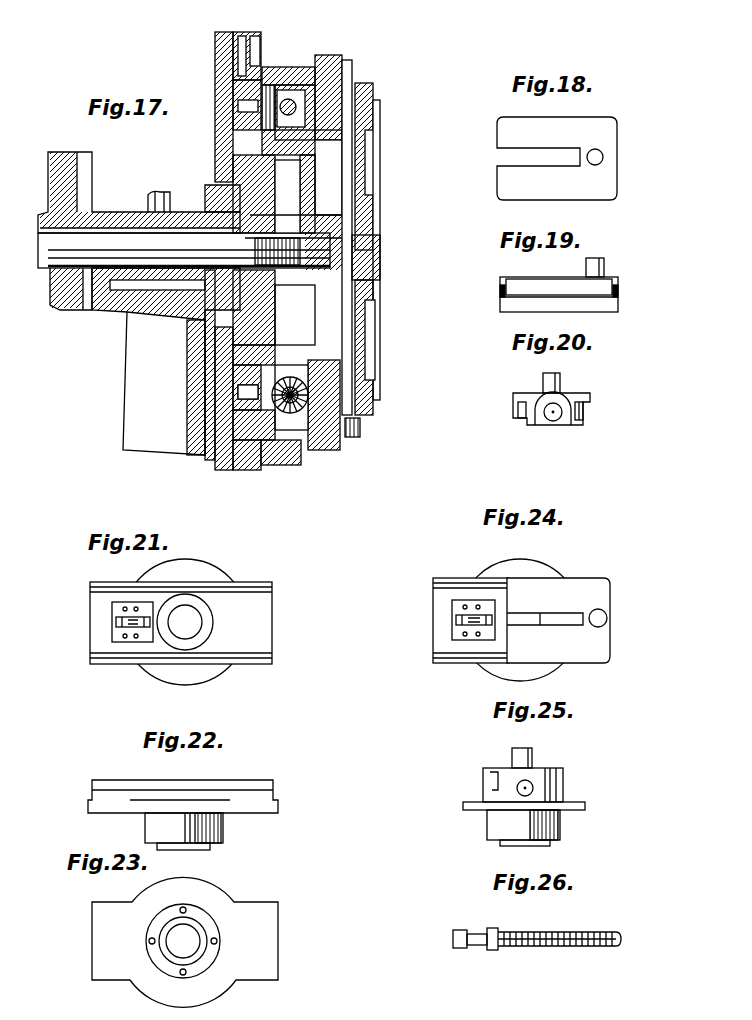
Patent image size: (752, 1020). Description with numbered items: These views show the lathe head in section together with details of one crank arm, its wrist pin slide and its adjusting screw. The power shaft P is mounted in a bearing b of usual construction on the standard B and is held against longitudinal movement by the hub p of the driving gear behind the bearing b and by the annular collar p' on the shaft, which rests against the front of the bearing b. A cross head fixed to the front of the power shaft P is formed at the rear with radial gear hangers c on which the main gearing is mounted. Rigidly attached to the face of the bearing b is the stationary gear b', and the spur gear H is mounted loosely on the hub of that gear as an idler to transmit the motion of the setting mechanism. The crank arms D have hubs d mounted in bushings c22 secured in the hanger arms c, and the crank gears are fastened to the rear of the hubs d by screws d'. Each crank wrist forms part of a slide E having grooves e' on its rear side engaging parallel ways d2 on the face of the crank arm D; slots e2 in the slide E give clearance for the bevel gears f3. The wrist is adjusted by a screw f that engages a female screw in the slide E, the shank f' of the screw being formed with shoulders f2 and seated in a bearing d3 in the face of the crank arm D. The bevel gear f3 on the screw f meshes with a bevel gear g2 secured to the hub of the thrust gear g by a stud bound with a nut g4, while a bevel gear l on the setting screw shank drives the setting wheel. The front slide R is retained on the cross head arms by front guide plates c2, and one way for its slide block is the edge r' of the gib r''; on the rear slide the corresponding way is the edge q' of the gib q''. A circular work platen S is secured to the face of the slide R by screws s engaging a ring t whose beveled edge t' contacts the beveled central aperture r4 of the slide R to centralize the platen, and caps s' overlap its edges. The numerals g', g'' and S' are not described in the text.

In FIG. 17, the hub of the driving gear p is at (130, 231).
In FIG. 17, the power shaft P is at (184, 250).
In FIG. 17, the standard B is at (166, 361).
In FIG. 17, the bearing b is at (135, 256).
In FIG. 17, the stationary gear b' is at (270, 221).
In FIG. 17, the thrust gear g is at (219, 251).
In FIG. 17, the pinion g' is at (213, 455).
In FIG. 17, the key g'' is at (223, 281).
In FIG. 17, the bevel gear g2 is at (275, 66).
In FIG. 17, the nut g4 is at (232, 110).
In FIG. 17, the gear hanger c is at (249, 28).
In FIG. 17, the front guide plate c2 is at (374, 70).
In FIG. 17, the bushing c22 is at (258, 45).
In FIG. 17, the crank arm D is at (290, 66).
In FIG. 21, the crank arm D is at (222, 622).
In FIG. 22, the crank arm D is at (213, 773).
In FIG. 23, the crank arm D is at (108, 932).
In FIG. 24, the crank arm D is at (507, 617).
In FIG. 25, the crank arm D is at (462, 806).
In FIG. 17, the hub of the crank arm d is at (210, 308).
In FIG. 22, the hub of the crank arm d is at (184, 831).
In FIG. 23, the hub of the crank arm d is at (191, 941).
In FIG. 25, the hub of the crank arm d is at (531, 828).
In FIG. 17, the screw d' is at (225, 267).
In FIG. 21, the parallel way d2 is at (284, 593).
In FIG. 22, the parallel way d2 is at (275, 784).
In FIG. 24, the parallel way d2 is at (428, 593).
In FIG. 21, the bearing d3 is at (106, 626).
In FIG. 24, the bearing d3 is at (446, 624).
In FIG. 17, the slide E is at (333, 52).
In FIG. 18, the slide E is at (557, 158).
In FIG. 19, the slide E is at (559, 285).
In FIG. 20, the slide E is at (543, 404).
In FIG. 24, the slide E is at (558, 620).
In FIG. 25, the slide E is at (523, 785).
In FIG. 17, the groove e' is at (289, 211).
In FIG. 19, the groove e' is at (562, 293).
In FIG. 20, the groove e' is at (557, 421).
In FIG. 25, the groove e' is at (533, 769).
In FIG. 18, the slot e2 is at (530, 141).
In FIG. 20, the slot e2 is at (542, 387).
In FIG. 24, the slot e2 is at (566, 607).
In FIG. 18, the bevel gear l is at (608, 149).
In FIG. 19, the bevel gear l is at (597, 258).
In FIG. 20, the bevel gear l is at (561, 393).
In FIG. 24, the bevel gear l is at (612, 612).
In FIG. 25, the bevel gear l is at (530, 765).
In FIG. 17, the screw f is at (321, 306).
In FIG. 26, the screw f is at (537, 925).
In FIG. 26, the shank f' is at (473, 960).
In FIG. 17, the shoulder f2 is at (296, 452).
In FIG. 26, the shoulder f2 is at (466, 930).
In FIG. 17, the bevel gear f3 is at (300, 370).
In FIG. 17, the spur gear H is at (216, 176).
In FIG. 17, the edge of the gib q' is at (364, 222).
In FIG. 17, the gib q'' is at (367, 25).
In FIG. 17, the screw s is at (395, 276).
In FIG. 17, the cap s' is at (390, 248).
In FIG. 17, the work platen S is at (379, 242).
In FIG. 17, the collar S' is at (375, 249).
In FIG. 17, the ring t is at (391, 235).
In FIG. 17, the beveled edge t' is at (392, 300).
In FIG. 17, the edge of the gib r' is at (334, 343).
In FIG. 17, the central aperture r4 is at (382, 202).
In FIG. 17, the gib r'' is at (346, 473).
In FIG. 17, the front slide R is at (368, 332).
In FIG. 17, the annular collar p' is at (336, 462).